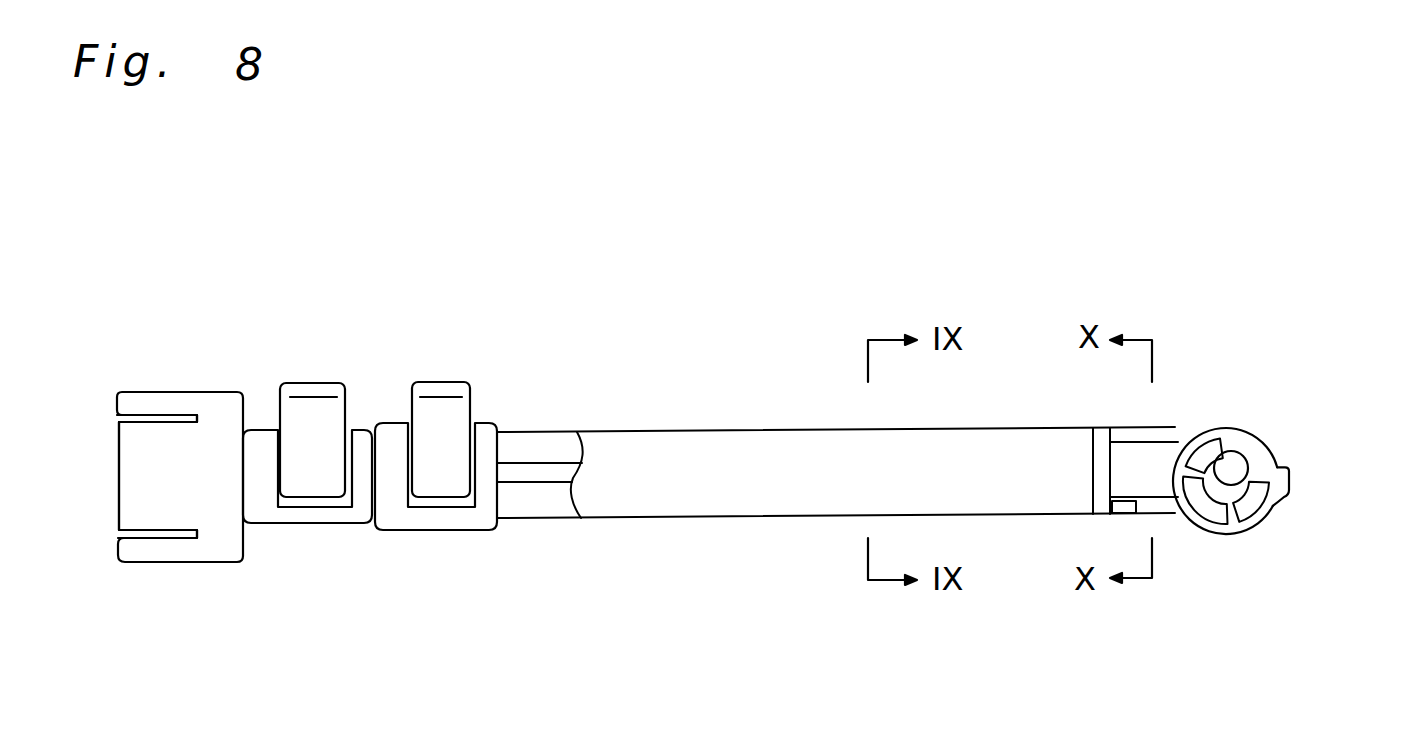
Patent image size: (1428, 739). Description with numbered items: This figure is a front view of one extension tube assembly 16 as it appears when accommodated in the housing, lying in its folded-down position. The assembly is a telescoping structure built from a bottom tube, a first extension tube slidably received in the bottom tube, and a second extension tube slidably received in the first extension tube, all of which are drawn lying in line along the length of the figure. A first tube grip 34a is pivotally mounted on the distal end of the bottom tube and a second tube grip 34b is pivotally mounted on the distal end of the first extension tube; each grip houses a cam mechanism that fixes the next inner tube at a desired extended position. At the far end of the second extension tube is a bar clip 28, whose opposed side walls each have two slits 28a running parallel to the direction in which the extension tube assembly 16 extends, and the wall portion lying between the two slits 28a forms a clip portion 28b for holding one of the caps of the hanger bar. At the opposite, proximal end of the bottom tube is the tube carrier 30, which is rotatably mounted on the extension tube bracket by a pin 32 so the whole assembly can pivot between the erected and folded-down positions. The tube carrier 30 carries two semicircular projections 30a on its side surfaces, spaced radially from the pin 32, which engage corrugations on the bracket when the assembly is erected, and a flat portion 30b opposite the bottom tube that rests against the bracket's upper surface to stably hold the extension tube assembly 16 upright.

The extension tube assembly 16 is at (690, 425).
The bar clip 28 is at (215, 408).
The slits 28a is at (120, 420).
The clip portion 28b is at (177, 498).
The tube carrier 30 is at (1238, 440).
The projections 30a is at (1125, 511).
The flat portion 30b is at (1289, 491).
The pin 32 is at (1235, 467).
The first tube grip 34a is at (452, 423).
The second tube grip 34b is at (320, 412).